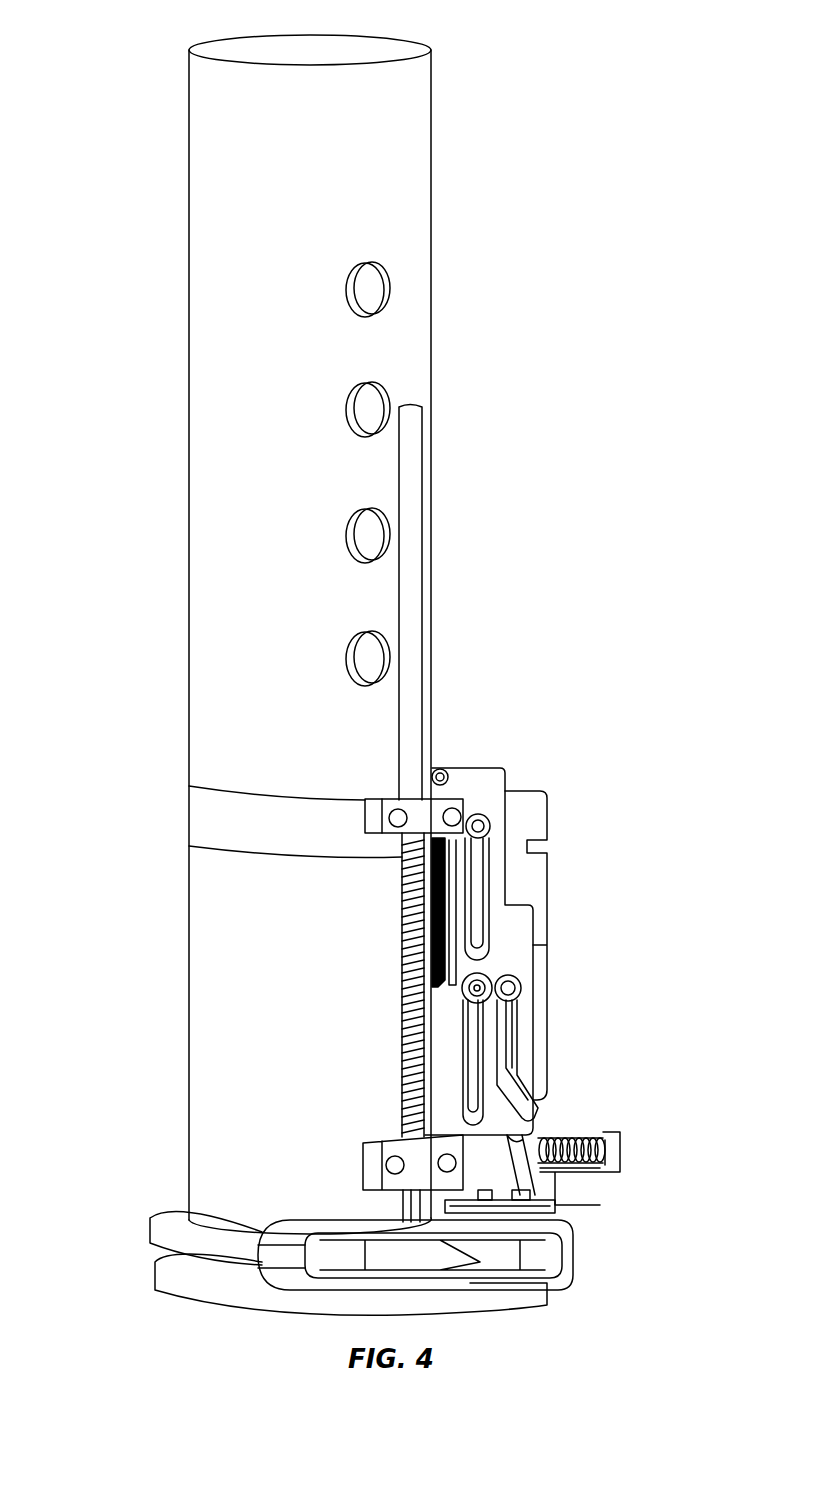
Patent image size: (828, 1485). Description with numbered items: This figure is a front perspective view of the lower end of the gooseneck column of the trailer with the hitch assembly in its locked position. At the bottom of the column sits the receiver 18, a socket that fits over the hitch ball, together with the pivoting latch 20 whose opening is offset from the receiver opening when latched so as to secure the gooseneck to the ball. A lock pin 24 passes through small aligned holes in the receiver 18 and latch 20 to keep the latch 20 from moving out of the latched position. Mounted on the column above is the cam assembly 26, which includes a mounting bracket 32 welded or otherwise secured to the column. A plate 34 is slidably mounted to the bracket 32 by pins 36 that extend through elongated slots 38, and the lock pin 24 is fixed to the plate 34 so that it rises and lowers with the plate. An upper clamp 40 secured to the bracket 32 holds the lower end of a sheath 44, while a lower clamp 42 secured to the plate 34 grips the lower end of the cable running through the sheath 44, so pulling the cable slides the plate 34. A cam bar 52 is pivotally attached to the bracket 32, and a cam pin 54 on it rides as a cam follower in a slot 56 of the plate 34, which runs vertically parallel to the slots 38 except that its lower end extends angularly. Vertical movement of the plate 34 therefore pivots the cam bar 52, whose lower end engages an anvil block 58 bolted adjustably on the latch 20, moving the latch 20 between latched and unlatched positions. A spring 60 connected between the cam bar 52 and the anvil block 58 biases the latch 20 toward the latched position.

The receiver 18 is at (155, 1270).
The latch 20 is at (150, 1225).
The lock pin 24 is at (428, 1278).
The cam assembly 26 is at (540, 957).
The mounting bracket 32 is at (542, 812).
The plate 34 is at (497, 778).
The pins 36 is at (480, 812).
The elongated slots 38 is at (472, 892).
The upper clamp 40 is at (370, 807).
The lower clamp 42 is at (393, 1140).
The sheath 44 is at (416, 486).
The cam bar 52 is at (545, 1195).
The cam pin 54 is at (514, 990).
The slot 56 is at (528, 1093).
The anvil block 58 is at (598, 1170).
The spring 60 is at (560, 1140).